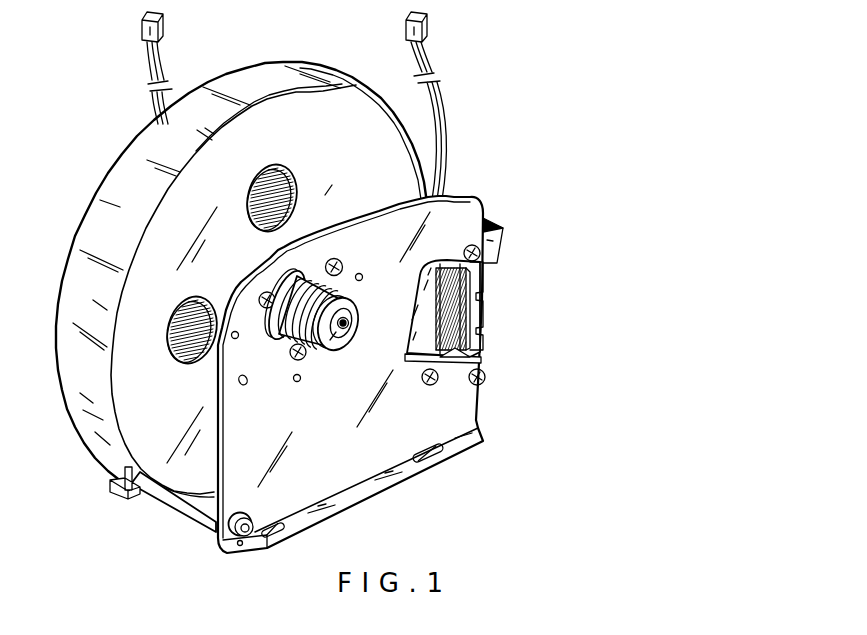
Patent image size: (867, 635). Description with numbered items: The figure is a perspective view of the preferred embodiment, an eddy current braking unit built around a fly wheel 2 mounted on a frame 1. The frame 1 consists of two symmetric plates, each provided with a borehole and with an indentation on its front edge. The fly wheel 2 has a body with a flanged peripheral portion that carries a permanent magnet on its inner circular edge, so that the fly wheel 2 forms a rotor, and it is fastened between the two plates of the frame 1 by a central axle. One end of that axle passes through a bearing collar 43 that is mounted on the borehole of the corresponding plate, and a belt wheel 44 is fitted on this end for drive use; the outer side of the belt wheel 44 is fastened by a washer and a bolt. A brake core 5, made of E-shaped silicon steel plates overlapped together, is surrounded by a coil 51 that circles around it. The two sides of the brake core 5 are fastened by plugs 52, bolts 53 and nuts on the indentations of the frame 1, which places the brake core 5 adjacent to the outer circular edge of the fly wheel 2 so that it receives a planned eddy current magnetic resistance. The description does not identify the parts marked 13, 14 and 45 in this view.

The frame 1 is at (365, 447).
The fly wheel 2 is at (133, 187).
The brake core 5 is at (503, 308).
The support bracket 13 is at (196, 510).
The nut 14 is at (233, 552).
The bearing collar 43 is at (296, 268).
The belt wheel 44 is at (348, 295).
The shaft hub 45 is at (348, 325).
The coil 51 is at (472, 280).
The plugs 52 is at (468, 357).
The bolts 53 is at (481, 378).